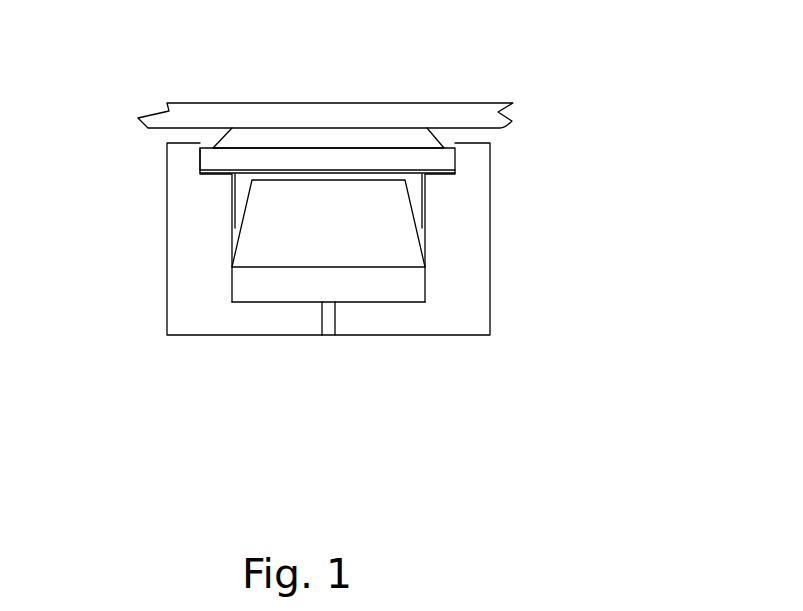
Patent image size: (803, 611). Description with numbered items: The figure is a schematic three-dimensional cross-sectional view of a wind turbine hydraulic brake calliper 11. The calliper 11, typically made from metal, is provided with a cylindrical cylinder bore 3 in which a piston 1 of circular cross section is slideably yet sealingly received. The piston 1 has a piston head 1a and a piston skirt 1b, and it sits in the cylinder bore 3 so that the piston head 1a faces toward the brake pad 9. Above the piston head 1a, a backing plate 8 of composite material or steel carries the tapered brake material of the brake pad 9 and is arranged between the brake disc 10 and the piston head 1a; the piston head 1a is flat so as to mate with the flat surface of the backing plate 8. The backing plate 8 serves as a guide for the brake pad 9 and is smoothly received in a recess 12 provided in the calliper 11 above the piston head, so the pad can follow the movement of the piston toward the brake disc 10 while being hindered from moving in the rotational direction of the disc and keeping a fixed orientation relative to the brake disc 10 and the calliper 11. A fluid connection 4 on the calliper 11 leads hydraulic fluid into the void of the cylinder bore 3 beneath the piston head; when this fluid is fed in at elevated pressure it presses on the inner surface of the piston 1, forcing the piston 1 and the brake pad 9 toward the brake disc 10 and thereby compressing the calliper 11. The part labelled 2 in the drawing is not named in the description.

The piston 1 is at (245, 180).
The piston head 1a is at (380, 175).
The piston skirt 1b is at (420, 228).
The housing 2 is at (452, 292).
The cylinder bore 3 is at (395, 292).
The fluid connection 4 is at (330, 315).
The backing plate 8 is at (298, 155).
The brake pad 9 is at (363, 137).
The brake disc 10 is at (447, 99).
The wind turbine hydraulic brake calliper 11 is at (357, 206).
The recess 12 is at (192, 158).